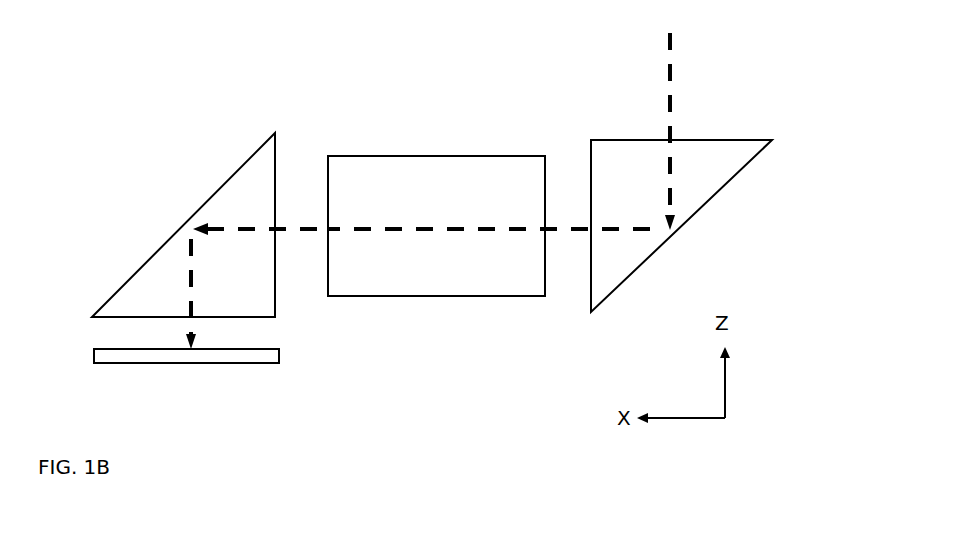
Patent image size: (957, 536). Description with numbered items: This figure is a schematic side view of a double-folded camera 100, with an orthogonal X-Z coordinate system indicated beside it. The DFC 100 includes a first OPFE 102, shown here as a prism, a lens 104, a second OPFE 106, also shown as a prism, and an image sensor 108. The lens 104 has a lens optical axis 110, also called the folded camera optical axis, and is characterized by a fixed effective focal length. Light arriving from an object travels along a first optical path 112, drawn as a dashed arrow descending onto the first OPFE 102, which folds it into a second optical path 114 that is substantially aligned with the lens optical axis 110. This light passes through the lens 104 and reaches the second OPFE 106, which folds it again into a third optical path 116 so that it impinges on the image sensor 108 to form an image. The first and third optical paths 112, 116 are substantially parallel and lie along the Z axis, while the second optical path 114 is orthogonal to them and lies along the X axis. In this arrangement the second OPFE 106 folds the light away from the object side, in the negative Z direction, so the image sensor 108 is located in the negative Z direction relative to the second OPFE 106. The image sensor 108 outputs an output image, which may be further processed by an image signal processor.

The double-folded camera 100 is at (432, 72).
The first OPFE 102 is at (703, 158).
The lens 104 is at (450, 267).
The second OPFE 106 is at (130, 302).
The image sensor 108 is at (232, 357).
The lens optical axis 110 is at (392, 222).
The first optical path 112 is at (670, 75).
The second optical path 114 is at (283, 235).
The third optical path 116 is at (187, 248).